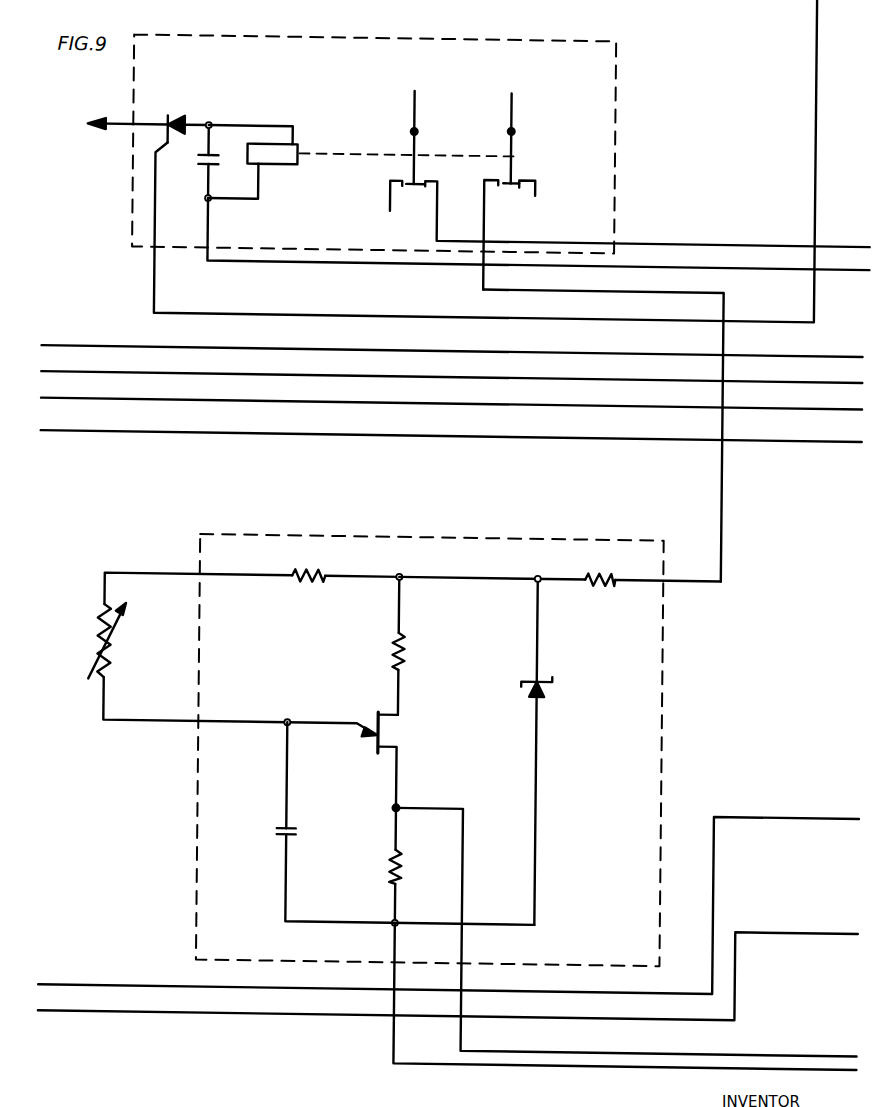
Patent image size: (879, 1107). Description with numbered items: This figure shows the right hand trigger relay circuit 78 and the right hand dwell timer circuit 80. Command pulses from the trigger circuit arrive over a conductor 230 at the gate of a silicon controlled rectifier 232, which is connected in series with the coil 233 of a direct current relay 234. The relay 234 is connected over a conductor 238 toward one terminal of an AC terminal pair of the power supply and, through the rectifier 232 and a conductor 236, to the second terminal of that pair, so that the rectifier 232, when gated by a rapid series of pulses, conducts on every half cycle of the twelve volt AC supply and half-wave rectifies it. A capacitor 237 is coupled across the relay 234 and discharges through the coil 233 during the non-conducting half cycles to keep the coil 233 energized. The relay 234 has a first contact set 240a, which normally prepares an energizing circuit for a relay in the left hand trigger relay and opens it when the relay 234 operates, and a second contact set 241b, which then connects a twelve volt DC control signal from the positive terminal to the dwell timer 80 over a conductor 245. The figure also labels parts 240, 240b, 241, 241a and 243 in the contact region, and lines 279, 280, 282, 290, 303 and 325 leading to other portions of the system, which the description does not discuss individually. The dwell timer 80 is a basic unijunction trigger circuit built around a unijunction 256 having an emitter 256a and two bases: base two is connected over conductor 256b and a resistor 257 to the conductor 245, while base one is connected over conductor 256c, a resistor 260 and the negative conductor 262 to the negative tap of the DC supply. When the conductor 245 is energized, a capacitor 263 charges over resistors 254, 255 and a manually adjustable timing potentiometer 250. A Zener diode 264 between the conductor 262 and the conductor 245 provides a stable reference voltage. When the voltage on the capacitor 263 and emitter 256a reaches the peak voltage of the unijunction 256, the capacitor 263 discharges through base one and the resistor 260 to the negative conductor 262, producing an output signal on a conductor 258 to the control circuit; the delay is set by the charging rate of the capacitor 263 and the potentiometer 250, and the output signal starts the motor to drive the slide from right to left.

The right hand trigger relay circuit 78 is at (374, 134).
The right hand dwell timer circuit 80 is at (430, 735).
The conductor 230 is at (818, 48).
The silicon controlled rectifier 232 is at (182, 114).
The coil 233 is at (275, 161).
The direct current relay 234 is at (300, 133).
The conductor 236 is at (120, 126).
The capacitor 237 is at (196, 157).
The conductor 238 is at (797, 257).
The relay contact set 240 is at (411, 132).
The first contact set 240a is at (430, 159).
The fixed contact 240b is at (400, 156).
The relay contact set 241 is at (518, 144).
The fixed contact 241a is at (524, 164).
The second contact set 241b is at (490, 183).
The conductor 243 is at (795, 234).
The conductor 245 is at (729, 470).
The timing potentiometer 250 is at (94, 647).
The resistor 254 is at (604, 546).
The resistor 255 is at (310, 544).
The unijunction 256 is at (372, 749).
The emitter 256a is at (372, 720).
The conductor 256b is at (407, 706).
The conductor 256c is at (408, 759).
The resistor 257 is at (414, 634).
The conductor 258 is at (849, 1043).
The resistor 260 is at (414, 862).
The conductor 262 is at (756, 1057).
The capacitor 263 is at (288, 831).
The Zener diode 264 is at (554, 678).
The conductor 279 is at (103, 397).
The conductor 280 is at (103, 344).
The conductor 282 is at (103, 370).
The conductor 290 is at (103, 429).
The conductor 303 is at (96, 1009).
The conductor 325 is at (96, 982).